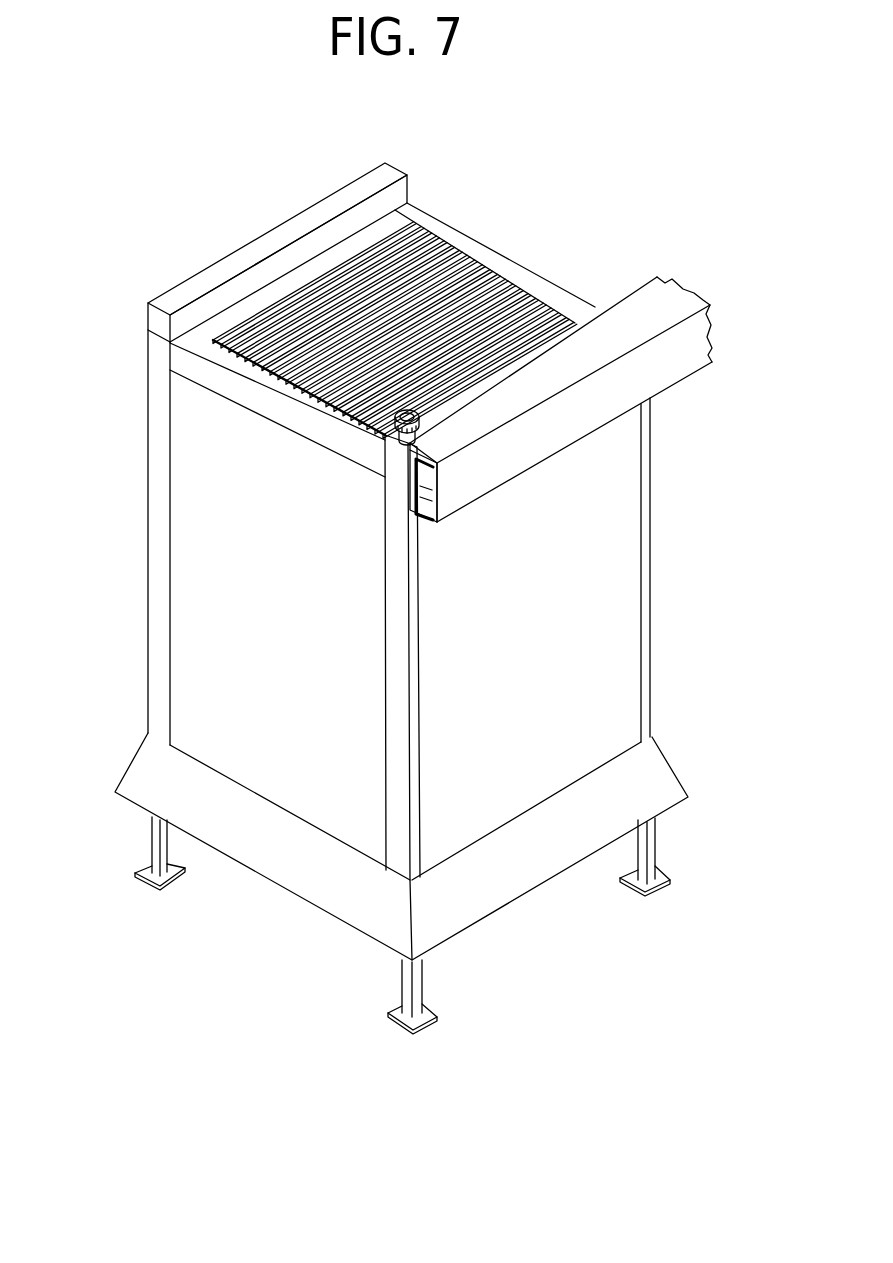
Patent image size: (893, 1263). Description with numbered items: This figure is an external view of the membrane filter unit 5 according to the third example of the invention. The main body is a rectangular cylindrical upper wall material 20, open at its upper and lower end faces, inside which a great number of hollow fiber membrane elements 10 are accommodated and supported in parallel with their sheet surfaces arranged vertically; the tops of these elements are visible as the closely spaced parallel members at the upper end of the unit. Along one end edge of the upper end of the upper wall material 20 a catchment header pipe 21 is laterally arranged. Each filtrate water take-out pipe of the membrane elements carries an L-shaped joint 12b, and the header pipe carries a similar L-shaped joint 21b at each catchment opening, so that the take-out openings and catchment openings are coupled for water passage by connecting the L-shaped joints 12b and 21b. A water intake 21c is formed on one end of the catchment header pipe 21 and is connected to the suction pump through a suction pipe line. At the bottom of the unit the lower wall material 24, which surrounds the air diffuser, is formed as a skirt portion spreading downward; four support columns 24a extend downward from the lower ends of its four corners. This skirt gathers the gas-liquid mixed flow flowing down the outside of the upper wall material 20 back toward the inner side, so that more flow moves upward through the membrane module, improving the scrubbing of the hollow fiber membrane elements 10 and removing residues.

The membrane filter unit 5 is at (207, 233).
The hollow fiber membrane element 10 is at (431, 306).
The L-shaped joint 12b is at (422, 500).
The upper wall material 20 is at (612, 601).
The catchment header pipe 21 is at (627, 300).
The L-shaped joint 21b is at (420, 479).
The water intake 21c is at (410, 410).
The lower wall material 24 is at (660, 781).
The support column 24a is at (155, 843).